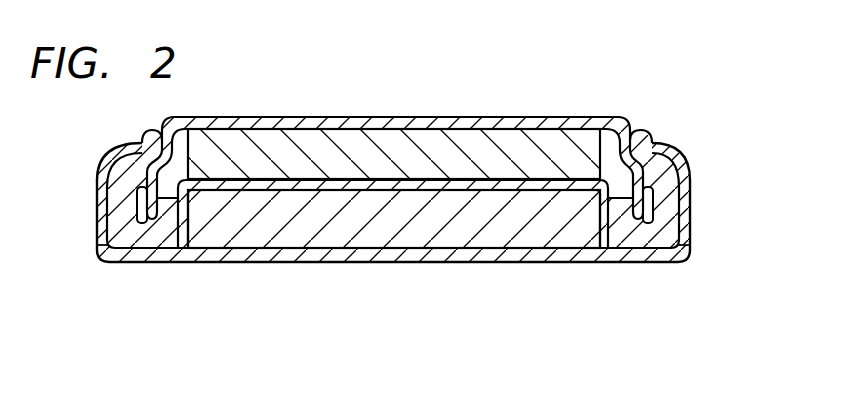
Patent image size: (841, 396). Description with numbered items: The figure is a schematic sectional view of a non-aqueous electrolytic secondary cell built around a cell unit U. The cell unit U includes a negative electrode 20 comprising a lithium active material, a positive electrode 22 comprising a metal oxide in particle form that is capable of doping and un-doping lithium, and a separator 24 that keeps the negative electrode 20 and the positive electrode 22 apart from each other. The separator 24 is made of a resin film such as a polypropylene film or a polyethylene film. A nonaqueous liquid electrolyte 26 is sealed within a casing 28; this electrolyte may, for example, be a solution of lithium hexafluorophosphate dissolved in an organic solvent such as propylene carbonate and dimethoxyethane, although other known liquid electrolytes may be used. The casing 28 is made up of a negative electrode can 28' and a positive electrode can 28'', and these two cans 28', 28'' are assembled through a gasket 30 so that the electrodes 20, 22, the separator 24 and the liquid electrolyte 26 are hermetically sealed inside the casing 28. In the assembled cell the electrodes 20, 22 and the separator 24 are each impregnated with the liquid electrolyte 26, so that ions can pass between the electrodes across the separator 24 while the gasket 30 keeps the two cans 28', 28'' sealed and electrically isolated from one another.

The negative electrode 20 is at (328, 152).
The positive electrode 22 is at (450, 228).
The separator 24 is at (541, 188).
The nonaqueous liquid electrolyte 26 is at (612, 128).
The casing 28 is at (414, 198).
The negative electrode can 28' is at (395, 142).
The positive electrode can 28'' is at (395, 280).
The gasket 30 is at (645, 158).
The cell unit U is at (414, 322).